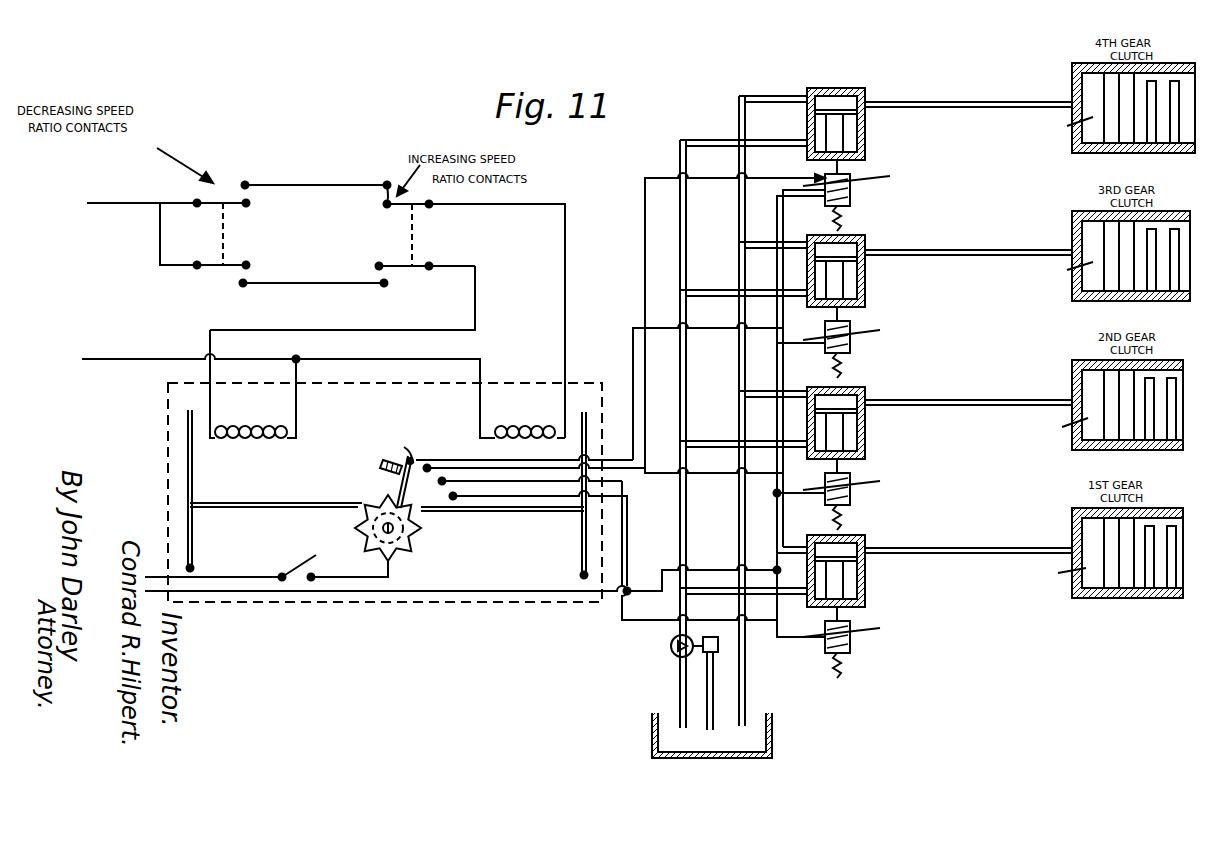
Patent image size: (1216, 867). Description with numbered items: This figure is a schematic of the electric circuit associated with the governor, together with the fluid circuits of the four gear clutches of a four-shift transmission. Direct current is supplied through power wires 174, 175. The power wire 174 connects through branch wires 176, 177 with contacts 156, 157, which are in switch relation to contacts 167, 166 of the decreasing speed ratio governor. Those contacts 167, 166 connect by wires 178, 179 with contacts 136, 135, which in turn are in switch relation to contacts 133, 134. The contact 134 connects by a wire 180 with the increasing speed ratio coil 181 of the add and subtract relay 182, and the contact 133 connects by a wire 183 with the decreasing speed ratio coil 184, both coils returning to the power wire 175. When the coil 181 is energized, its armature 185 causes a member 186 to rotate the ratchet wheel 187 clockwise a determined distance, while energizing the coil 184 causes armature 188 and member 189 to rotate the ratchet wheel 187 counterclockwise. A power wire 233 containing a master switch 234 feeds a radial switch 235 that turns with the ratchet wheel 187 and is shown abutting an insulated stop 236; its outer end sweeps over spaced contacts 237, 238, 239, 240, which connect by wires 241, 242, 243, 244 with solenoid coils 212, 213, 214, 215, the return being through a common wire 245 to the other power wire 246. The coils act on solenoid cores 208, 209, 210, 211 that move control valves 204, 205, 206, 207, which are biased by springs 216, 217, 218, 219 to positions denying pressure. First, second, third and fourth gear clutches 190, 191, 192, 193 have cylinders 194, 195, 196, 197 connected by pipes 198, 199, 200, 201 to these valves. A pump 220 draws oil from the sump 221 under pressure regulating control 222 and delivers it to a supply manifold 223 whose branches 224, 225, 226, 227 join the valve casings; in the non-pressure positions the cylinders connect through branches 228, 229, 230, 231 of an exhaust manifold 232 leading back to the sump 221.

The contact 133 is at (384, 207).
The contact 134 is at (376, 264).
The contact 135 is at (382, 288).
The contact 136 is at (373, 178).
The contact 156 is at (249, 206).
The contact 157 is at (249, 262).
The contact 166 is at (241, 287).
The contact 167 is at (245, 183).
The power wire 174 is at (120, 206).
The power wire 175 is at (112, 355).
The branch wire 176 is at (176, 186).
The branch wire 177 is at (168, 270).
The wire 178 is at (305, 184).
The wire 179 is at (325, 285).
The wire 180 is at (478, 293).
The increasing speed ratio coil 181 is at (238, 440).
The add and subtract relay 182 is at (166, 415).
The wire 183 is at (513, 208).
The decreasing speed ratio coil 184 is at (497, 425).
The armature 185 is at (194, 522).
The member 186 is at (290, 508).
The ratchet wheel 187 is at (352, 544).
The armature 188 is at (578, 545).
The member 189 is at (515, 512).
The first gear clutch 190 is at (1105, 598).
The second gear clutch 191 is at (1072, 450).
The third gear clutch 192 is at (1074, 298).
The fourth gear clutch 193 is at (1074, 151).
The clutch cylinder 194 is at (1049, 581).
The clutch cylinder 195 is at (1049, 428).
The clutch cylinder 196 is at (1060, 271).
The clutch cylinder 197 is at (1060, 127).
The pipe 198 is at (957, 556).
The pipe 199 is at (957, 408).
The pipe 200 is at (975, 258).
The pipe 201 is at (970, 110).
The control valve 204 is at (866, 597).
The control valve 205 is at (866, 444).
The control valve 206 is at (866, 292).
The control valve 207 is at (866, 145).
The solenoid core 208 is at (852, 650).
The solenoid core 209 is at (852, 503).
The solenoid core 210 is at (852, 347).
The solenoid core 211 is at (852, 194).
The solenoid coil 212 is at (858, 628).
The solenoid coil 213 is at (858, 480).
The solenoid coil 214 is at (858, 330).
The solenoid coil 215 is at (863, 176).
The spring 216 is at (840, 668).
The spring 217 is at (840, 518).
The spring 218 is at (840, 372).
The spring 219 is at (840, 219).
The pump 220 is at (670, 646).
The sump 221 is at (774, 727).
The pressure regulating control 222 is at (720, 650).
The supply manifold 223 is at (678, 540).
The manifold branch 224 is at (728, 590).
The manifold branch 225 is at (731, 442).
The manifold branch 226 is at (731, 292).
The manifold branch 227 is at (731, 142).
The exhaust branch 228 is at (793, 546).
The exhaust branch 229 is at (792, 392).
The exhaust branch 230 is at (790, 244).
The exhaust branch 231 is at (764, 94).
The exhaust manifold 232 is at (737, 222).
The power wire 233 is at (255, 575).
The master switch 234 is at (300, 560).
The radial switch 235 is at (398, 483).
The insulated stop 236 is at (380, 466).
The contact 237 is at (406, 450).
The contact 238 is at (428, 465).
The contact 239 is at (443, 478).
The contact 240 is at (452, 499).
The wire 241 is at (626, 517).
The wire 242 is at (657, 471).
The wire 243 is at (630, 352).
The wire 244 is at (643, 270).
The common wire 245 is at (777, 522).
The power wire 246 is at (262, 594).